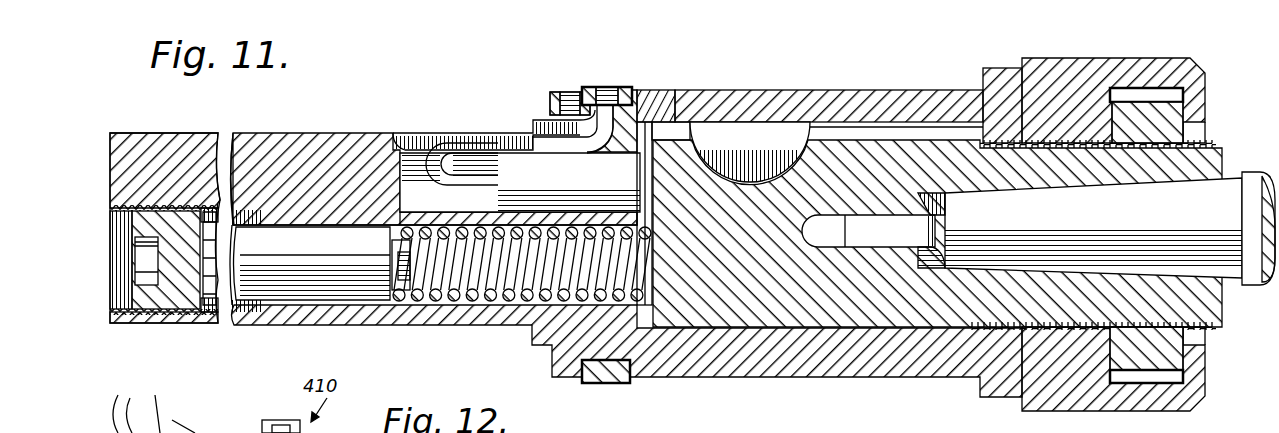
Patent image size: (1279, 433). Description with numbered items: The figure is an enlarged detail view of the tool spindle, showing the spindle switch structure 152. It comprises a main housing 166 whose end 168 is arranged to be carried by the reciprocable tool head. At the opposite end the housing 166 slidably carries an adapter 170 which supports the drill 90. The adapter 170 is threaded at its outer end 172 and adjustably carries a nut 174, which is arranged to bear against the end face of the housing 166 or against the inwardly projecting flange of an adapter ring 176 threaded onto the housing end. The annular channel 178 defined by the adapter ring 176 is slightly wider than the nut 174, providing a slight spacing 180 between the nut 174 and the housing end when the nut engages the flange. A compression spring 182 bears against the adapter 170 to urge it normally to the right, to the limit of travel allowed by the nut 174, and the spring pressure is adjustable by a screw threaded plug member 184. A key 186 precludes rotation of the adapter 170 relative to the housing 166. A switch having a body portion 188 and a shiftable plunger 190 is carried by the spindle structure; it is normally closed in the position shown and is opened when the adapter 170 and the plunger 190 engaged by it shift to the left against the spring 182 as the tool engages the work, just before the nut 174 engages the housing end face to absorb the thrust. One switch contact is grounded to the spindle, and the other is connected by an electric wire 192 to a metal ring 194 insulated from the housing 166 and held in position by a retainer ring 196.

The end of main housing 168 is at (196, 143).
The main housing 166 is at (721, 372).
The screw threaded plug member 184 is at (283, 287).
The compression spring 182 is at (452, 297).
The switch body portion 188 is at (520, 157).
The electric wire 192 is at (443, 146).
The shiftable plunger 190 is at (647, 153).
The spindle switch structure 152 is at (773, 91).
The retainer ring 196 is at (550, 92).
The metal ring 194 is at (587, 92).
The outer end of adapter 172 is at (998, 142).
The adapter ring 176 is at (1193, 77).
The annular channel 178 is at (1128, 92).
The nut 174 is at (1183, 117).
The spacing 180 is at (1135, 365).
The adapter 170 is at (839, 315).
The key 186 is at (725, 130).
The drill 90 is at (1250, 182).